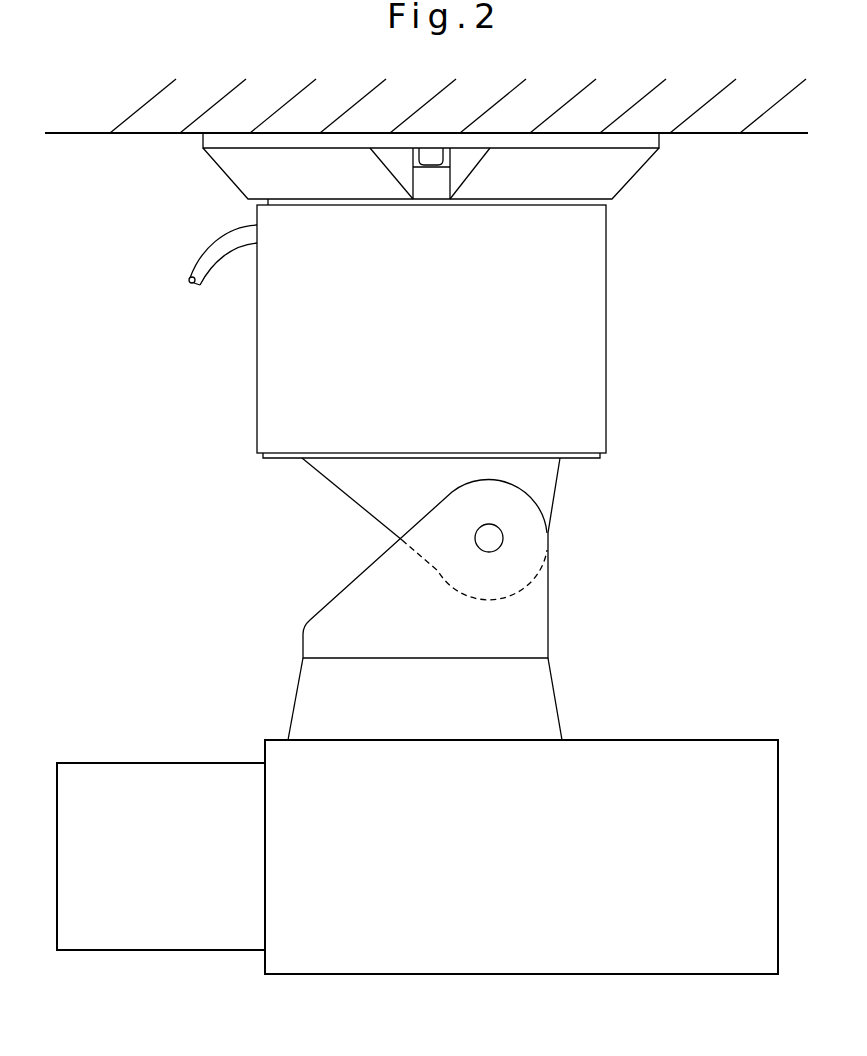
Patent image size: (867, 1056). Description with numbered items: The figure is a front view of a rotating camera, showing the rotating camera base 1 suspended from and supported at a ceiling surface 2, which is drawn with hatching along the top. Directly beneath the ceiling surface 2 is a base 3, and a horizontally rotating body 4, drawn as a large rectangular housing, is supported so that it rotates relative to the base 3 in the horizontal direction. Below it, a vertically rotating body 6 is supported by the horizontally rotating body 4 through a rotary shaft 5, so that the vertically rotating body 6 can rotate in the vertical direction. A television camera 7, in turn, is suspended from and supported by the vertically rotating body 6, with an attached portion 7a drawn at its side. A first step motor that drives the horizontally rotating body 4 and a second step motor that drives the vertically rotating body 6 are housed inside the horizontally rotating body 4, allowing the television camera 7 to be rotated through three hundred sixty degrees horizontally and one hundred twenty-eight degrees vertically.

The rotating camera base 1 is at (628, 359).
The ceiling surface 2 is at (712, 134).
The base 3 is at (613, 188).
The horizontally rotating body 4 is at (606, 413).
The rotary shaft 5 is at (489, 525).
The vertically rotating body 6 is at (535, 616).
The television camera 7 is at (622, 740).
The auxiliary gripping member 7a is at (160, 772).